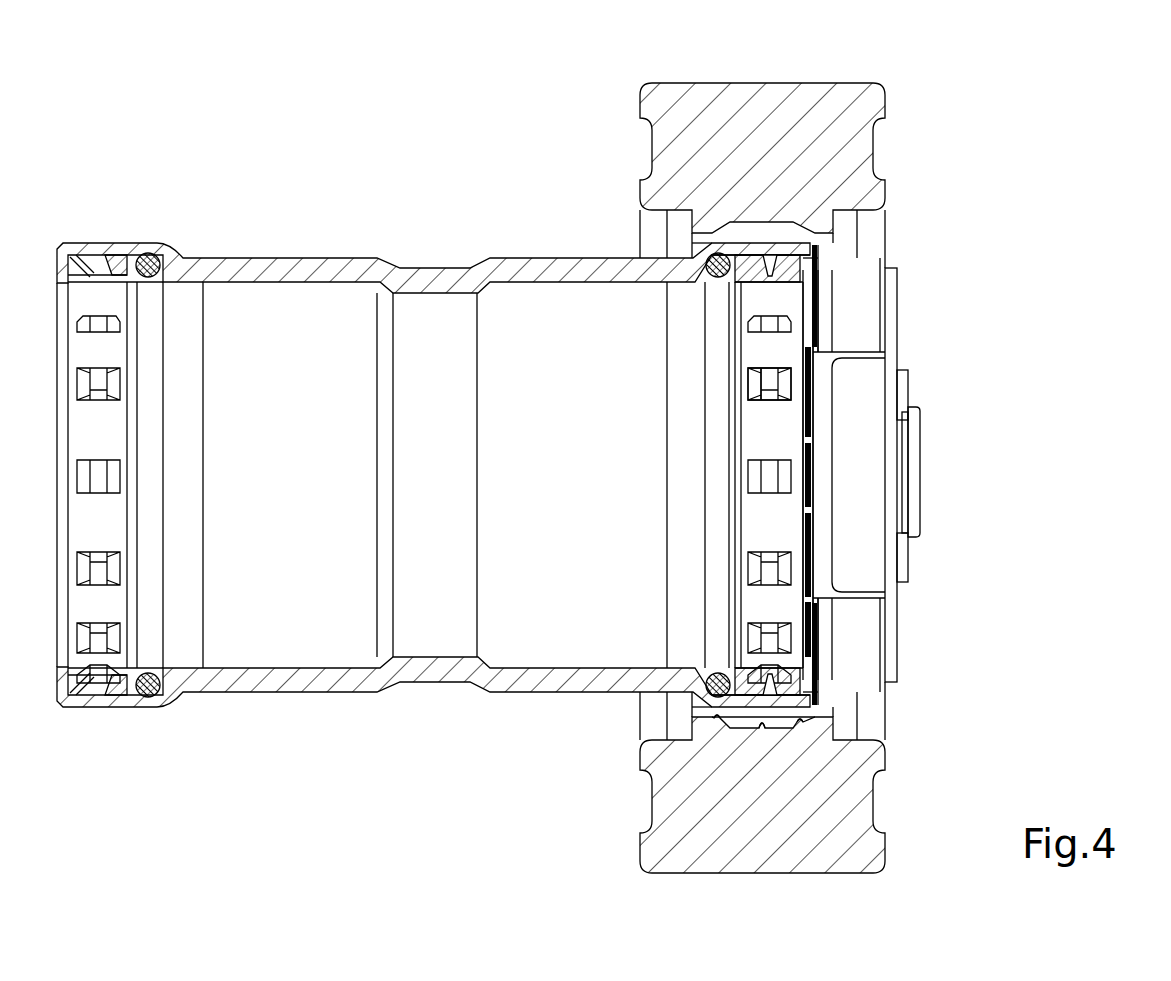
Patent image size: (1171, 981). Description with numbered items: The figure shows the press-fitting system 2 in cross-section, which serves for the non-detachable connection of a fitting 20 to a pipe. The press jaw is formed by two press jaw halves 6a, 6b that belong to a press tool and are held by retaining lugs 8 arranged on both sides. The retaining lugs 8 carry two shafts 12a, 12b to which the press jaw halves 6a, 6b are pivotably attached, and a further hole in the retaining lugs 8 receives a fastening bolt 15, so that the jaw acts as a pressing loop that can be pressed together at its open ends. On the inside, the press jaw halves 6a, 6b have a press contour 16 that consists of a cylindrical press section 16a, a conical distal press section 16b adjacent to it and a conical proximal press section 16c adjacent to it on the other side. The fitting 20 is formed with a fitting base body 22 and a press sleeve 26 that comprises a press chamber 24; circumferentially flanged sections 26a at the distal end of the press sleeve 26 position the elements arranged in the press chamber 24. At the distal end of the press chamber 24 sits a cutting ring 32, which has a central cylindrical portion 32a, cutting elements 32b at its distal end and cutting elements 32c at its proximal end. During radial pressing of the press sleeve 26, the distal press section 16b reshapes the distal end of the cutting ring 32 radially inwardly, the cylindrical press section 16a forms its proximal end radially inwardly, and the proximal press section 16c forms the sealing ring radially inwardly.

The press-fitting system 2 is at (1062, 182).
The press jaw half 6a is at (857, 150).
The press jaw half 6b is at (862, 798).
The retaining lug 8 is at (889, 630).
The shaft 12a is at (904, 392).
The shaft 12b is at (904, 560).
The fastening bolt 15 is at (924, 492).
The press contour 16 is at (742, 760).
The cylindrical press section 16a is at (768, 728).
The conical distal press section 16b is at (801, 723).
The conical proximal press section 16c is at (716, 720).
The fitting 20 is at (485, 218).
The fitting base body 22 is at (568, 276).
The press chamber 24 is at (773, 256).
The press sleeve 26 is at (754, 246).
The flanged section 26a is at (806, 312).
The cutting ring 32 is at (768, 425).
The central cylindrical portion 32a is at (770, 372).
The cutting element 32b is at (797, 385).
The cutting element 32c is at (788, 379).